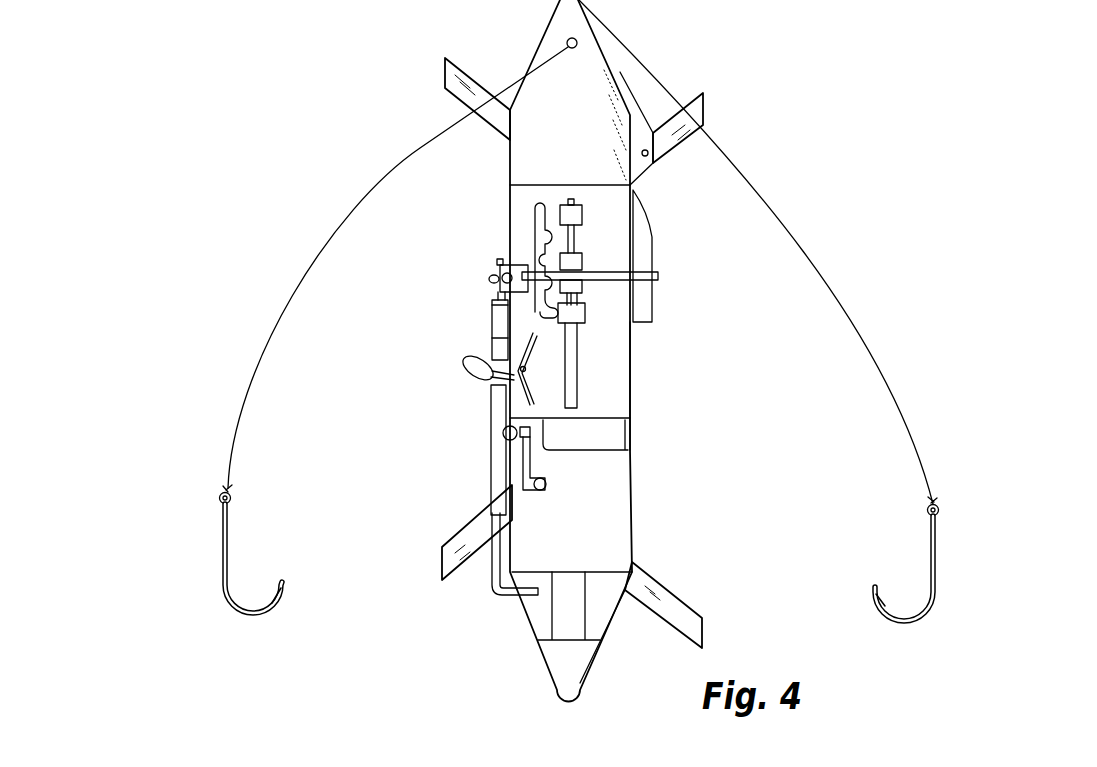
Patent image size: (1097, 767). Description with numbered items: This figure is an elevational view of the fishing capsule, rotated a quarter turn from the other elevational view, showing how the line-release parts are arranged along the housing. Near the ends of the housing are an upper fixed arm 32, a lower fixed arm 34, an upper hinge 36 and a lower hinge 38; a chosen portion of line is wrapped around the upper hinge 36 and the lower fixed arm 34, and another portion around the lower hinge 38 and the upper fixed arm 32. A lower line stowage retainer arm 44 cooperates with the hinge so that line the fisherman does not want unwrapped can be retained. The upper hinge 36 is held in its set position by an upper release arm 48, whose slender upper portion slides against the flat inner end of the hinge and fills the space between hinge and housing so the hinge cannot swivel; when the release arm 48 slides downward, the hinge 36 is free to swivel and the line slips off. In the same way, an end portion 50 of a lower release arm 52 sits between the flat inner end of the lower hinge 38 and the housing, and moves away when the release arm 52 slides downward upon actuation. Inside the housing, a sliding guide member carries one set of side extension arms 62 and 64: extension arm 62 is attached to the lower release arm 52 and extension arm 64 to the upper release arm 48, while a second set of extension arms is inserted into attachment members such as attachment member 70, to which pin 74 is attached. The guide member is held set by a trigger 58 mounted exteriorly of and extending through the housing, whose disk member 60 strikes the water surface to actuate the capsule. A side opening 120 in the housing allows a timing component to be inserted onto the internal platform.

The upper fixed arm 32 is at (469, 73).
The lower fixed arm 34 is at (678, 608).
The upper hinge 36 is at (690, 133).
The lower hinge 38 is at (456, 535).
The lower line stowage retainer arm 44 is at (510, 598).
The upper release arm 48 is at (653, 247).
The end portion of lower release arm 50 is at (500, 483).
The lower release arm 52 is at (500, 410).
The first release member (trigger) 58 is at (488, 352).
The disk member 60 is at (467, 365).
The side extension arm 62 is at (493, 312).
The side extension arm 64 is at (632, 327).
The attachment member 70 is at (568, 313).
The pin 74 is at (575, 237).
The side opening 120 is at (594, 450).